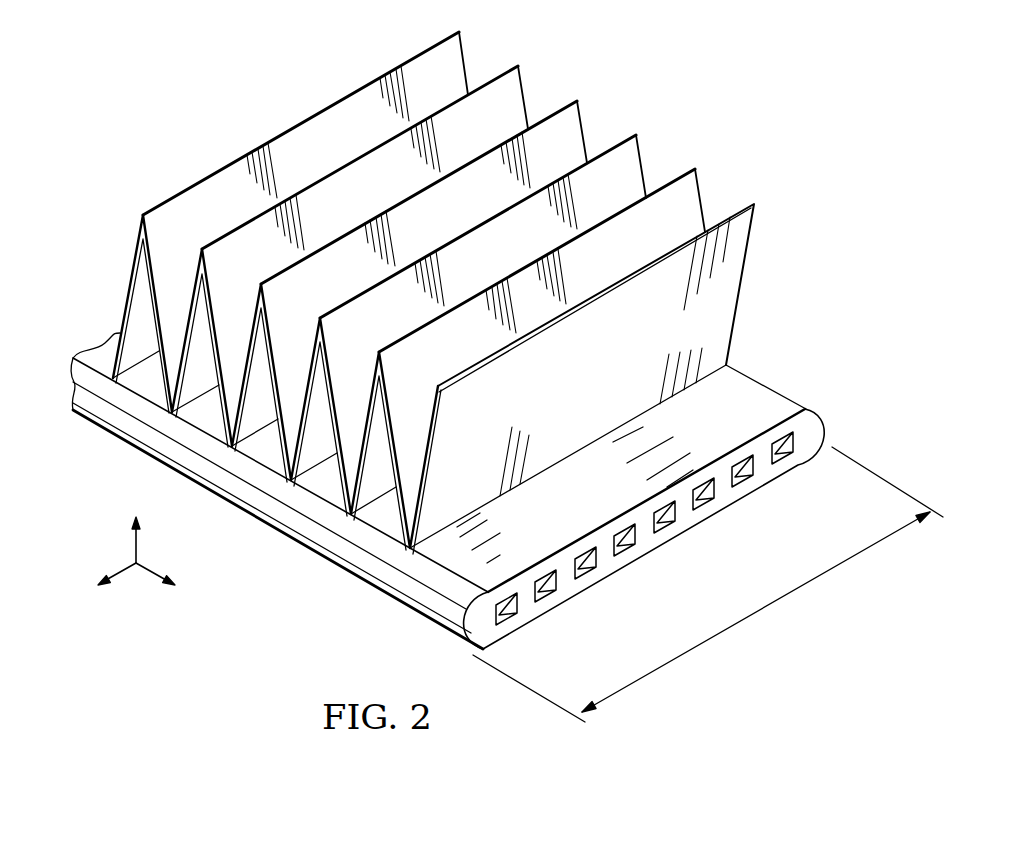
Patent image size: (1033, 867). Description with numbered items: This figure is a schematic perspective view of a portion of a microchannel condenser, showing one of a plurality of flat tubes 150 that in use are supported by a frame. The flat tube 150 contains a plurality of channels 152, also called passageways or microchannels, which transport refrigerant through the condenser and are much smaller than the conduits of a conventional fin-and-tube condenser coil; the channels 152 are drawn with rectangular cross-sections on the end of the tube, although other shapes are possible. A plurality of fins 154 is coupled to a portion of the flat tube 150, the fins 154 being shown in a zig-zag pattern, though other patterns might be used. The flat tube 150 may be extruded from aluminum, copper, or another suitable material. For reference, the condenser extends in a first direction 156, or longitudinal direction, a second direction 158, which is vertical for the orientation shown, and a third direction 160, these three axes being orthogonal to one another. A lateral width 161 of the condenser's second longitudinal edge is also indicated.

The flat tube 150 is at (762, 408).
The channels 152 is at (712, 500).
The fins 154 is at (722, 310).
The first direction 156 is at (147, 573).
The second direction 158 is at (138, 548).
The third direction 160 is at (127, 563).
The lateral width 161 is at (757, 612).